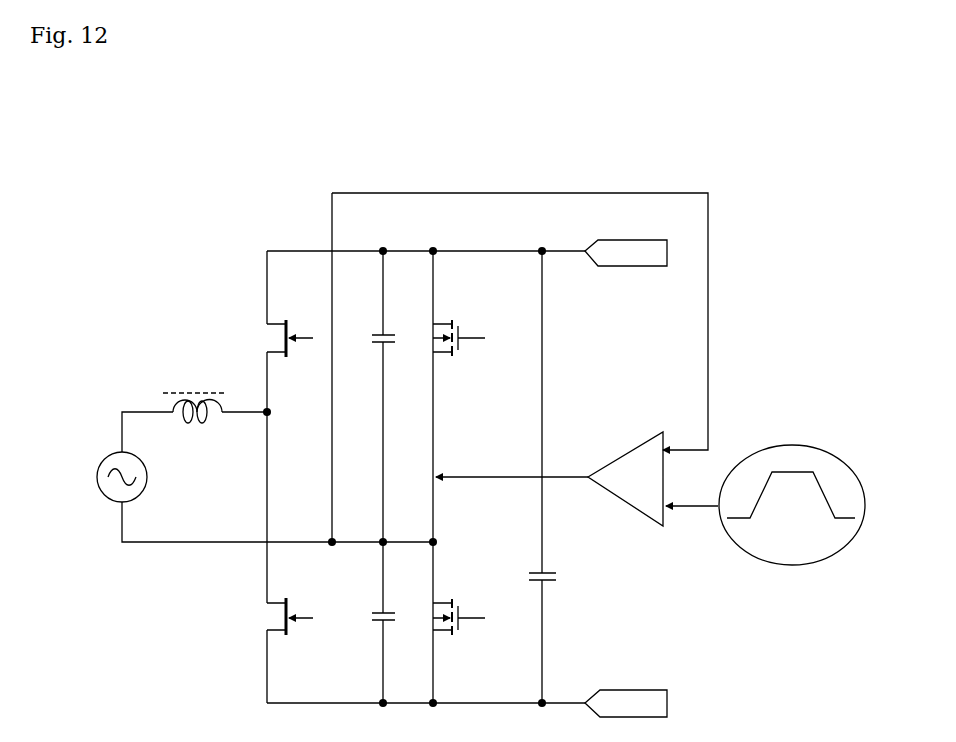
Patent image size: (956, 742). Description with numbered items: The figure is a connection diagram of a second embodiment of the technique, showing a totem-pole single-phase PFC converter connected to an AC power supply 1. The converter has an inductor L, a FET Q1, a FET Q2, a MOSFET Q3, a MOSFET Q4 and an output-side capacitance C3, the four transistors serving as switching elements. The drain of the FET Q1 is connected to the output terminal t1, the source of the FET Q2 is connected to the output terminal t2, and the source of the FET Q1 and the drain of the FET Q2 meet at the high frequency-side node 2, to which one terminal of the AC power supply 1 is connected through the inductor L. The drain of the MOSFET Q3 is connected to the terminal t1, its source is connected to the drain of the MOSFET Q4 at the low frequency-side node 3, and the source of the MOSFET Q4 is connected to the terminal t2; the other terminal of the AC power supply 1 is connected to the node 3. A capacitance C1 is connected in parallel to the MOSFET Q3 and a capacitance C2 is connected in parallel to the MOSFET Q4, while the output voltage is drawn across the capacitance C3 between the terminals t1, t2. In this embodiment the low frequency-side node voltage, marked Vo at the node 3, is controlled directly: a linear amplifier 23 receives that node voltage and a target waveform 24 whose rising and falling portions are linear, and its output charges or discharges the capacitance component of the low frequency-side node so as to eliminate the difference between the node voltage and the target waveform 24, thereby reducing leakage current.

The AC power supply 1 is at (106, 460).
The high frequency-side node 2 is at (272, 412).
The low frequency-side node 3 is at (438, 542).
The inductor L is at (190, 423).
The FET Q1 is at (289, 325).
The FET Q2 is at (289, 604).
The MOSFET Q3 is at (458, 328).
The MOSFET Q4 is at (460, 608).
The capacitance C1 is at (372, 340).
The capacitance C2 is at (372, 619).
The capacitance C3 is at (530, 575).
The output voltage Vo is at (430, 544).
The linear amplifier 23 is at (640, 442).
The target waveform 24 is at (792, 444).
The output terminal t1 is at (634, 268).
The output terminal t2 is at (633, 688).